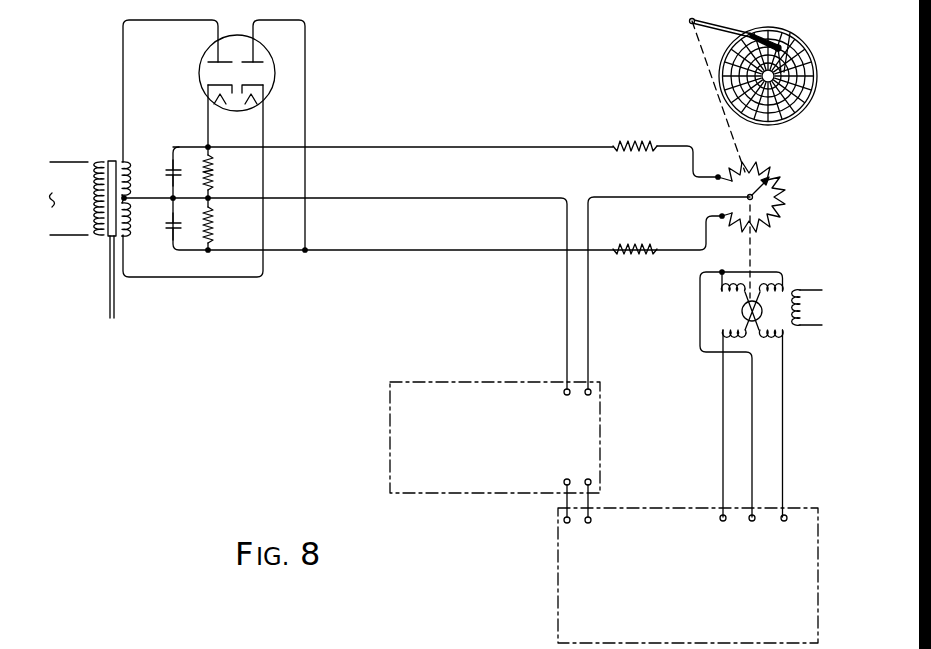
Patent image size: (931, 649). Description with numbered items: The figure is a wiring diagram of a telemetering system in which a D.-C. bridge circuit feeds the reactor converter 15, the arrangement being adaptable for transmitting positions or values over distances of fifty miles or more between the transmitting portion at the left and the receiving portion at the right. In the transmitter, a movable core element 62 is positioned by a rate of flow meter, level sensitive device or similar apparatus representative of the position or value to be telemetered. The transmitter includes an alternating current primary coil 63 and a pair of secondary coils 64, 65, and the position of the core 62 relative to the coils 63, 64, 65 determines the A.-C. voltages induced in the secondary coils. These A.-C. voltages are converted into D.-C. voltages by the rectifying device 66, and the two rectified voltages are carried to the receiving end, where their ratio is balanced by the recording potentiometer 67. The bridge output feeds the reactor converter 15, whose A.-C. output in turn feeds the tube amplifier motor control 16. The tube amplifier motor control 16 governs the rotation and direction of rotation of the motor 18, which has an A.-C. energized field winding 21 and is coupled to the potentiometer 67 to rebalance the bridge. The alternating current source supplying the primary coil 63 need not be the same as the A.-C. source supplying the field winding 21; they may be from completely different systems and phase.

The movable core element 62 is at (107, 239).
The alternating current primary coil 63 is at (91, 182).
The secondary coil 64 is at (140, 180).
The secondary coil 65 is at (140, 217).
The rectifying device 66 is at (202, 88).
The recording potentiometer 67 is at (767, 225).
The motor 18 is at (691, 321).
The motor field winding 21 is at (807, 323).
The reactor converter 15 is at (458, 493).
The tube amplifier motor control 16 is at (557, 578).